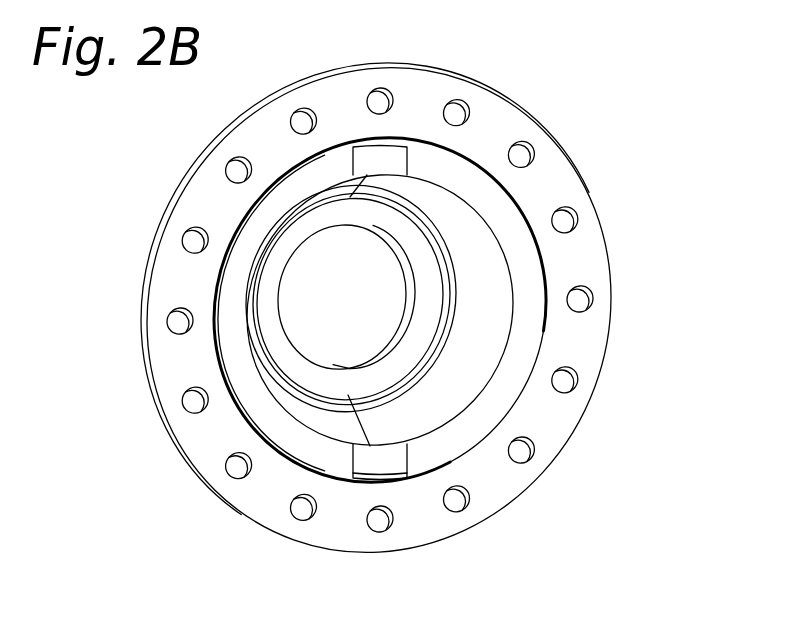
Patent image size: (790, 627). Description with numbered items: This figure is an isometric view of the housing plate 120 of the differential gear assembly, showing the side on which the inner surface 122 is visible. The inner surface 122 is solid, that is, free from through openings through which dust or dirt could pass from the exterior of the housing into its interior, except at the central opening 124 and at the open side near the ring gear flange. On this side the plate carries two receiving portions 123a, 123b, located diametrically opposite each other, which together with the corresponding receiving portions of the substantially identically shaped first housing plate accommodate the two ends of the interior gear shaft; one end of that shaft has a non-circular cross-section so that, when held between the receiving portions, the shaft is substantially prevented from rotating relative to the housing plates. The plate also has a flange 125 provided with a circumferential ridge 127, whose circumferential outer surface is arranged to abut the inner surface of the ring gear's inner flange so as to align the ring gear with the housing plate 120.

The housing plate 120 is at (630, 156).
The inner surface 122 is at (487, 298).
The receiving portion 123a is at (376, 466).
The receiving portion 123b is at (383, 160).
The opening 124 is at (348, 298).
The flange 125 is at (490, 122).
The circumferential ridge 127 is at (236, 242).